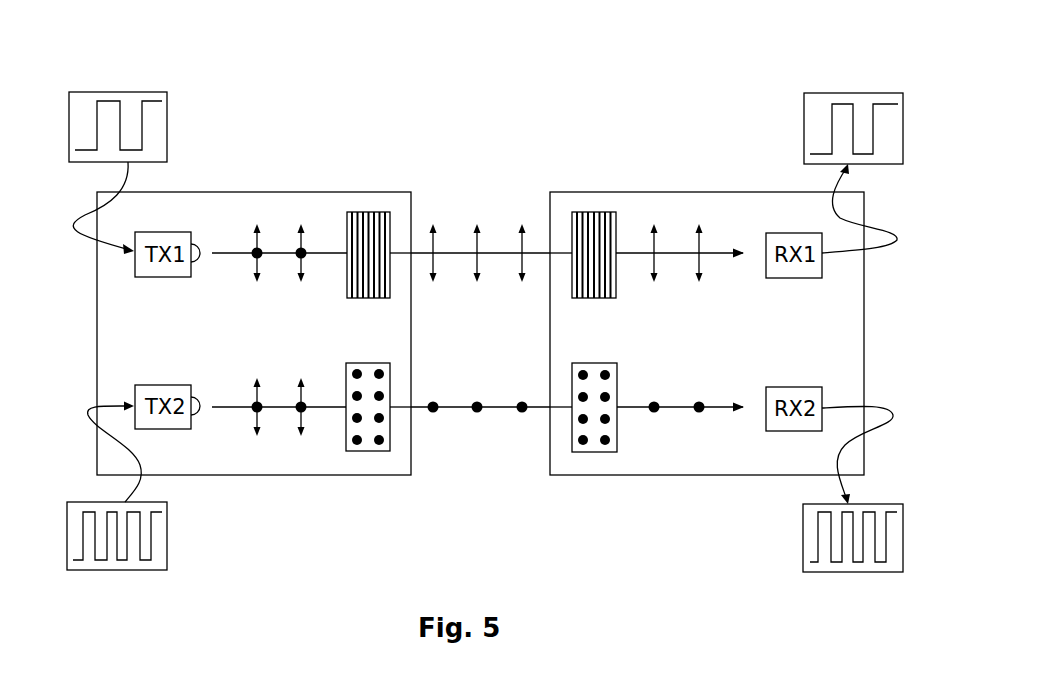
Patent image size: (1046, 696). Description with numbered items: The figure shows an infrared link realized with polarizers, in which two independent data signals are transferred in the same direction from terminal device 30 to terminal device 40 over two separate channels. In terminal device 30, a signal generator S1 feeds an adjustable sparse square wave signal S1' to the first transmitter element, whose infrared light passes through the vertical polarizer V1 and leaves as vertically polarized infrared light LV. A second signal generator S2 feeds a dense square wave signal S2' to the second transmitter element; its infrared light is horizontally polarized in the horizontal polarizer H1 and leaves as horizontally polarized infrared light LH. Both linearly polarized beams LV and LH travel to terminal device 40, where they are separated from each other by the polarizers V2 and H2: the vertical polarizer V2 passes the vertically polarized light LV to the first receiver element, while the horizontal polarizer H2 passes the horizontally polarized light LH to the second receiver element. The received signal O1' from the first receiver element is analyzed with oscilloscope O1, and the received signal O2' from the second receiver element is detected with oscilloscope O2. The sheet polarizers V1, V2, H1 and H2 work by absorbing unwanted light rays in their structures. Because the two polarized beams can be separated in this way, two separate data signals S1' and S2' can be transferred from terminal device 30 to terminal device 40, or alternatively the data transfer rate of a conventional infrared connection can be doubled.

The terminal device 30 is at (290, 192).
The terminal device 40 is at (688, 192).
The signal generator S1 is at (162, 127).
The sparse square wave signal S1' is at (118, 91).
The signal generator S2 is at (163, 536).
The dense square wave signal S2' is at (117, 577).
The oscilloscope O1 is at (813, 128).
The received signal O1' is at (854, 86).
The oscilloscope O2 is at (811, 538).
The received signal O2' is at (853, 586).
The vertical polarizer V1 is at (372, 212).
The vertical polarizer V2 is at (598, 212).
The horizontal polarizer H1 is at (375, 455).
The horizontal polarizer H2 is at (594, 455).
The vertically polarized infrared light LV is at (462, 253).
The horizontally polarized infrared light LH is at (453, 408).